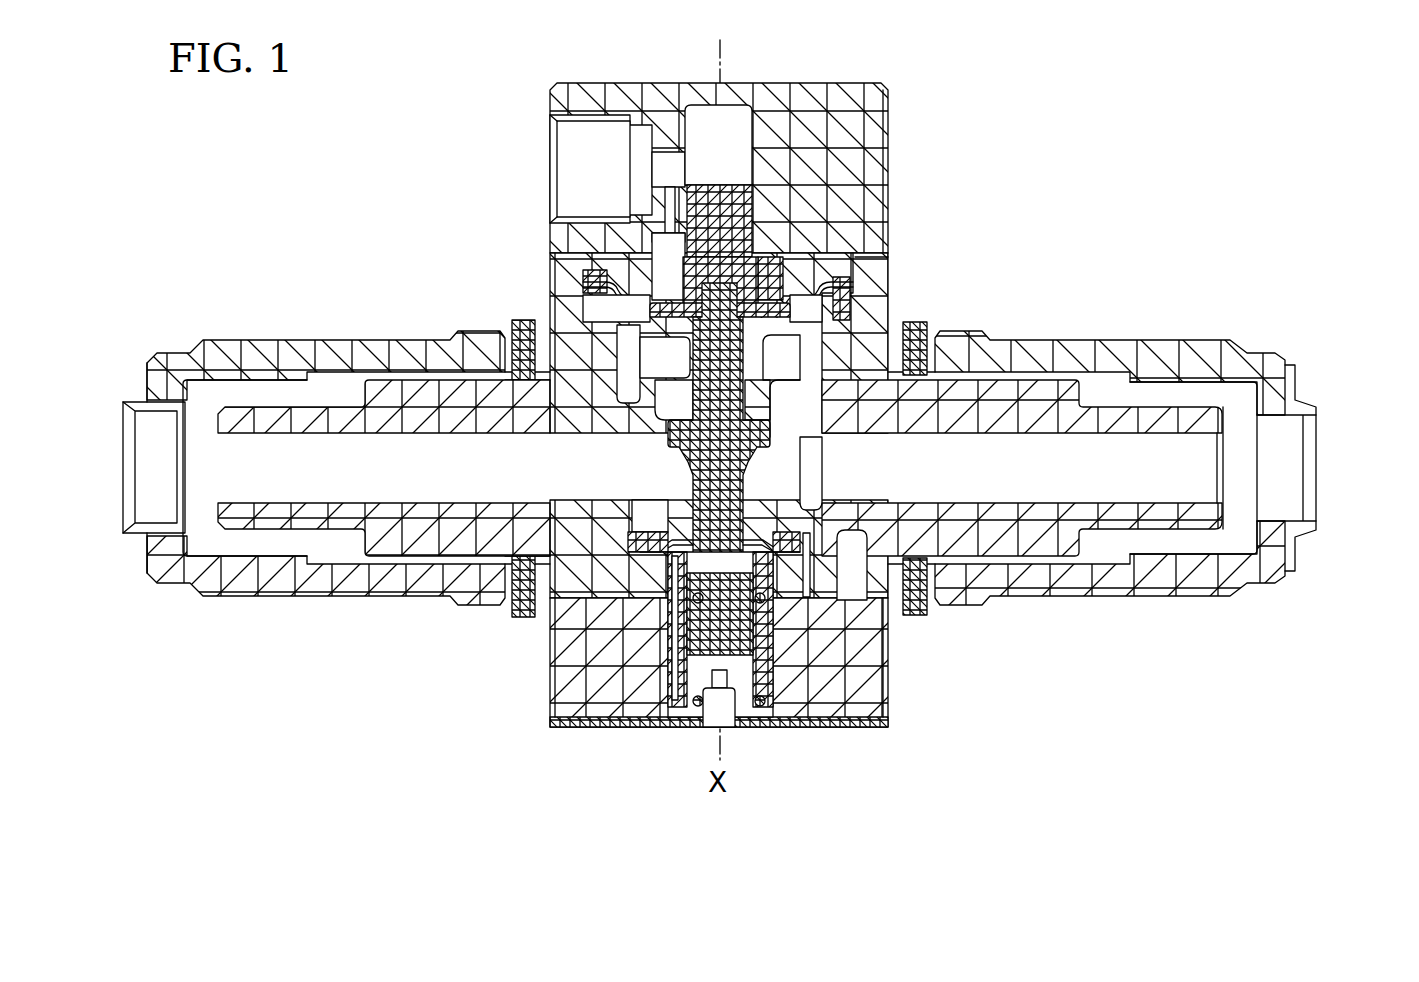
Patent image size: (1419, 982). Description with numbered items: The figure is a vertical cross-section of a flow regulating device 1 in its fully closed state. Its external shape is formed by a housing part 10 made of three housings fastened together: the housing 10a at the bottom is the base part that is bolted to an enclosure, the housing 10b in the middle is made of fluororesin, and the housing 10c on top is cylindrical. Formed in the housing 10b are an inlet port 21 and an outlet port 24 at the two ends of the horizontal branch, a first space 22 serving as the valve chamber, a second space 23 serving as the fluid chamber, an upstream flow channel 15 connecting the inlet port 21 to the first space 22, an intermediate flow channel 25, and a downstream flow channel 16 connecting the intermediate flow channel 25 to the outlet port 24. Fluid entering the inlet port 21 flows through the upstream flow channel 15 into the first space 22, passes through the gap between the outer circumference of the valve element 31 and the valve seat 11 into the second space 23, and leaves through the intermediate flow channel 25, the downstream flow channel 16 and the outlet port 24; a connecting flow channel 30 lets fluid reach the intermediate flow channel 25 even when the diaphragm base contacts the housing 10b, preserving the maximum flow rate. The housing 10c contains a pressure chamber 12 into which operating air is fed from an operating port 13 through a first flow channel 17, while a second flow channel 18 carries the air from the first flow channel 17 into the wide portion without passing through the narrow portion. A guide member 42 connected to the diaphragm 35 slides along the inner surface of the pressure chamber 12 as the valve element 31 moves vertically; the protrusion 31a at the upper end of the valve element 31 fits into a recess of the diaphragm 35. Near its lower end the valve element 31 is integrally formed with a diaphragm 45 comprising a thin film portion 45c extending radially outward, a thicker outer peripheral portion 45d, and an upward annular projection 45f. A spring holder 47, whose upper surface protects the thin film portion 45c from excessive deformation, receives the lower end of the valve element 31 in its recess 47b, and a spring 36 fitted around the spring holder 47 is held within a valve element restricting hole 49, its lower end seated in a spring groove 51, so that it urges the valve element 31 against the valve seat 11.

The flow regulating device 1 is at (1085, 92).
The housing part 10 is at (730, 423).
The housing 10a is at (875, 705).
The housing 10b is at (873, 278).
The housing 10c is at (572, 101).
The valve seat 11 is at (658, 408).
The pressure chamber 12 is at (738, 118).
The operating port 13 is at (573, 158).
The upstream flow channel 15 is at (272, 480).
The downstream flow channel 16 is at (1172, 480).
The first flow channel 17 is at (672, 160).
The second flow channel 18 is at (672, 204).
The inlet port 21 is at (218, 455).
The first space 22 is at (673, 502).
The second space 23 is at (677, 355).
The outlet port 24 is at (1218, 457).
The intermediate flow channel 25 is at (813, 408).
The connecting flow channel 30 is at (785, 358).
The valve element 31 is at (752, 452).
The protrusion 31a is at (737, 290).
The diaphragm 35 is at (725, 280).
The spring 36 is at (690, 701).
The guide member 42 is at (738, 207).
The diaphragm 45 is at (831, 625).
The thin film portion 45c is at (840, 538).
The outer peripheral portion 45d is at (795, 568).
The annular projection 45f is at (807, 535).
The spring holder 47 is at (697, 637).
The recess 47b is at (750, 634).
The valve element restricting hole 49 is at (672, 623).
The spring groove 51 is at (763, 705).